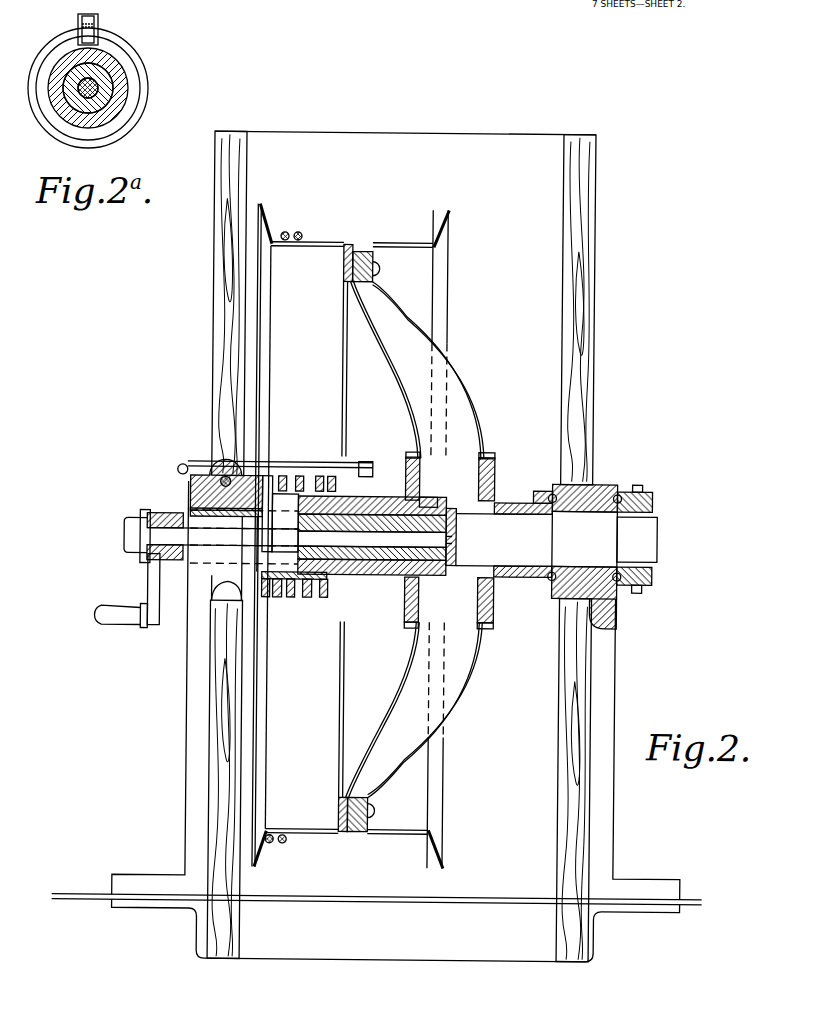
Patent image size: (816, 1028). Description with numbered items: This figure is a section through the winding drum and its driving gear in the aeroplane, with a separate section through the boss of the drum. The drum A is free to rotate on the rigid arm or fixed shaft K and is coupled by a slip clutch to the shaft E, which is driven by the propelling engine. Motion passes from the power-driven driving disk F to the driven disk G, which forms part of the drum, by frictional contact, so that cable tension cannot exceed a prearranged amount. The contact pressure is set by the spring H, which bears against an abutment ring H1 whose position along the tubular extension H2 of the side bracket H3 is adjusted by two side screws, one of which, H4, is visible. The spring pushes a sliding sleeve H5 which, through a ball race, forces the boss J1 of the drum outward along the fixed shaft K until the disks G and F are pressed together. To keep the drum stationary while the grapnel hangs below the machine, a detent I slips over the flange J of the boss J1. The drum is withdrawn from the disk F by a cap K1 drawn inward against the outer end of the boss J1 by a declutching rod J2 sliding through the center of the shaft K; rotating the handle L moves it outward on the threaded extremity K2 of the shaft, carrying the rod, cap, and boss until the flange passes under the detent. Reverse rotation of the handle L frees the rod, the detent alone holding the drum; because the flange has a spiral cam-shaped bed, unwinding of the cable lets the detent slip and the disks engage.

In FIG. 2, the drum A is at (316, 243).
In FIG. 2, the shaft E is at (648, 537).
In FIG. 2, the driving disk F is at (372, 262).
In FIG. 2, the driven disk G is at (348, 258).
In FIG. 2, the spring H is at (317, 603).
In FIG. 2, the abutment ring H1 is at (270, 600).
In FIG. 2, the tubular extension H2 is at (322, 474).
In FIG. 2, the side bracket H3 is at (192, 658).
In FIG. 2, the side screw H4 is at (183, 500).
In FIG. 2, the sliding sleeve H5 is at (336, 600).
In FIG. 2A, the detent I is at (91, 17).
In FIG. 2, the detent I is at (364, 466).
In FIG. 2A, the flange J is at (122, 49).
In FIG. 2A, the boss J1 is at (97, 120).
In FIG. 2, the boss J1 is at (358, 490).
In FIG. 2A, the declutching rod J2 is at (104, 88).
In FIG. 2, the declutching rod J2 is at (450, 540).
In FIG. 2A, the fixed shaft K is at (66, 91).
In FIG. 2, the fixed shaft K is at (414, 522).
In FIG. 2, the cap K1 is at (451, 562).
In FIG. 2, the threaded extremity K2 is at (134, 556).
In FIG. 2, the handle L is at (103, 622).